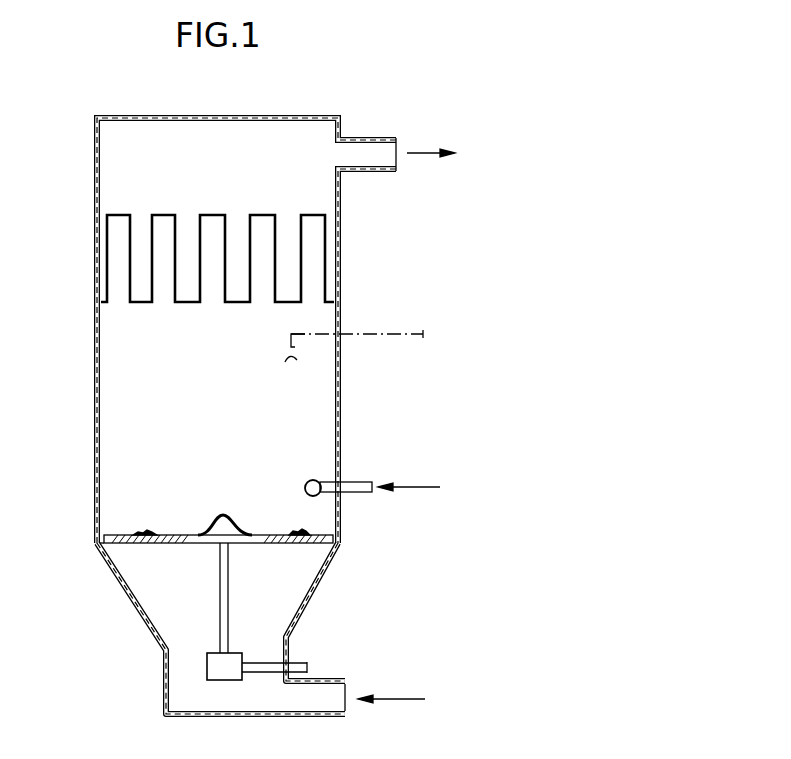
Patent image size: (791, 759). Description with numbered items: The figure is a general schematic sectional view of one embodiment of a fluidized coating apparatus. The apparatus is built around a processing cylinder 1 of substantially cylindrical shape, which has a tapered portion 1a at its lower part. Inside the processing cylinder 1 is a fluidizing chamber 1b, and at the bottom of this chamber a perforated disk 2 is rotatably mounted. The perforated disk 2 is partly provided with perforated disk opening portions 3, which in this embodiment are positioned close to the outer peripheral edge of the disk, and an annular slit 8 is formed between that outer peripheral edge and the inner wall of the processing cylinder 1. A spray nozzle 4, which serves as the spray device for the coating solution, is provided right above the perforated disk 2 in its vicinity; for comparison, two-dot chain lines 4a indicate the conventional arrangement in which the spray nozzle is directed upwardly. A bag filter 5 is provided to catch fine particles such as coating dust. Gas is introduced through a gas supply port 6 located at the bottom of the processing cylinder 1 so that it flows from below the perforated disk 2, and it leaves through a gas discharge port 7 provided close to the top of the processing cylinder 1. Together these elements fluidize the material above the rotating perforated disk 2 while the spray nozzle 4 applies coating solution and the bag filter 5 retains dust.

The processing cylinder 1 is at (210, 416).
The tapered portion 1a is at (113, 568).
The fluidizing chamber 1b is at (125, 445).
The perforated disk 2 is at (170, 545).
The perforated disk opening portions 3 is at (140, 537).
The spray nozzle 4 is at (316, 483).
The two-dot chain lines 4a is at (285, 372).
The bag filter 5 is at (303, 272).
The gas supply port 6 is at (310, 697).
The gas discharge port 7 is at (377, 152).
The annular slit 8 is at (100, 543).